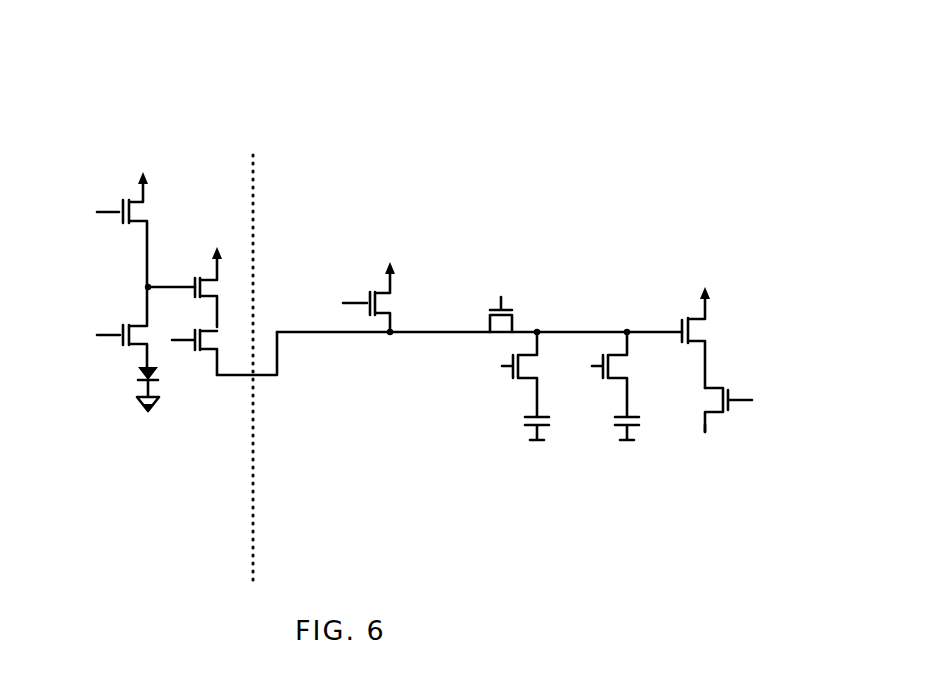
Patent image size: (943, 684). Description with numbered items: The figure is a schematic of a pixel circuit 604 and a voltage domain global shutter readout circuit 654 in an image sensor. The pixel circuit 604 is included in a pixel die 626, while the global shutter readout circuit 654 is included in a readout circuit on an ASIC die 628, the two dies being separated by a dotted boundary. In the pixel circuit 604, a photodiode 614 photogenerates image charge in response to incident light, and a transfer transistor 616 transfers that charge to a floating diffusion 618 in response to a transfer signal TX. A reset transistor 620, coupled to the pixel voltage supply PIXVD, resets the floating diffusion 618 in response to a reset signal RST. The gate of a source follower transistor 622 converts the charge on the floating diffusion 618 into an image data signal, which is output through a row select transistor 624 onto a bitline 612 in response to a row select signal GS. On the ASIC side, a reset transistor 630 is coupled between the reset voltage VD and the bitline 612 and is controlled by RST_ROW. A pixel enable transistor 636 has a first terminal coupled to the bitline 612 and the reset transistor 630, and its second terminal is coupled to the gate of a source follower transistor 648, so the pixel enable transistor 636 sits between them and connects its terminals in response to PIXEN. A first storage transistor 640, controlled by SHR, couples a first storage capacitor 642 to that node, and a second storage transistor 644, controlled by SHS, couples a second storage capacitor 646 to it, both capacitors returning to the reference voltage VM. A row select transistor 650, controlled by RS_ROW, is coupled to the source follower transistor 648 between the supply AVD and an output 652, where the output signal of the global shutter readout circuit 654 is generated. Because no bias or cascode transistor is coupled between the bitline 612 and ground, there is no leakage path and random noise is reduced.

The pixel circuit 604 is at (80, 86).
The voltage domain global shutter readout circuit 654 is at (744, 90).
The bitline 612 is at (224, 377).
The photodiode 614 is at (119, 393).
The transfer transistor 616 is at (112, 348).
The floating diffusion 618 is at (140, 285).
The reset transistor 620 is at (114, 240).
The source follower transistor 622 is at (214, 299).
The row select transistor 624 is at (207, 349).
The pixel die 626 is at (194, 576).
The ASIC die 628 is at (622, 305).
The reset transistor 630 is at (404, 306).
The pixel enable transistor 636 is at (481, 323).
The first storage transistor 640 is at (501, 384).
The first storage capacitor 642 is at (514, 428).
The second storage transistor 644 is at (596, 384).
The second storage capacitor 646 is at (609, 428).
The source follower transistor 648 is at (711, 324).
The row select transistor 650 is at (744, 385).
The output 652 is at (728, 440).